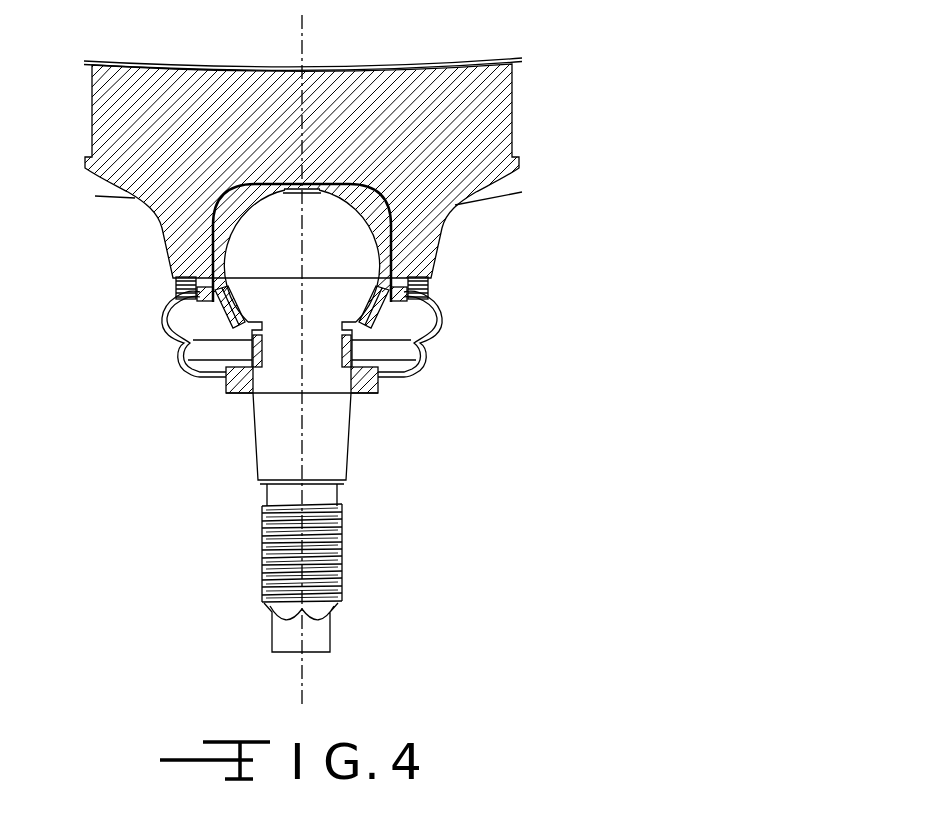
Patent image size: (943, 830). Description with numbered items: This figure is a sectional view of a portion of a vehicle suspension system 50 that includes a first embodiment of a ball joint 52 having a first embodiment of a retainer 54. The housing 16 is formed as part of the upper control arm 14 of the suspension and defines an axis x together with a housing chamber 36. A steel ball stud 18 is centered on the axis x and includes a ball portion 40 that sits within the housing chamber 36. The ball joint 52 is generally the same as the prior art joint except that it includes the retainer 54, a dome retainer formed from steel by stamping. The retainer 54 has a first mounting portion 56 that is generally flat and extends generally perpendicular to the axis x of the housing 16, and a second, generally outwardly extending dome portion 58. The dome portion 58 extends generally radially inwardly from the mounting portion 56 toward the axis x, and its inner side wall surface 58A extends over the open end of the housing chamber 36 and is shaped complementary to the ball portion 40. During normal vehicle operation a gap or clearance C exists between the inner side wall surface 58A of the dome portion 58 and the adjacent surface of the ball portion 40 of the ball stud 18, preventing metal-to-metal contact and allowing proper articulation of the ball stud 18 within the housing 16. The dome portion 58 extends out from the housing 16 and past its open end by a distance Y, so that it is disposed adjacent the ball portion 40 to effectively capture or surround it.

The upper control arm 14 is at (188, 135).
The housing 16 is at (448, 190).
The ball stud 18 is at (246, 459).
The housing chamber 36 is at (352, 198).
The ball portion 40 is at (290, 216).
The vehicle suspension system 50 is at (560, 112).
The ball joint 52 is at (360, 443).
The retainer 54 is at (417, 363).
The mounting portion 56 is at (437, 258).
The dome portion 58 is at (380, 327).
The inner side wall surface 58A is at (366, 327).
The axis x is at (305, 45).
The clearance C is at (244, 305).
The distance Y is at (223, 328).